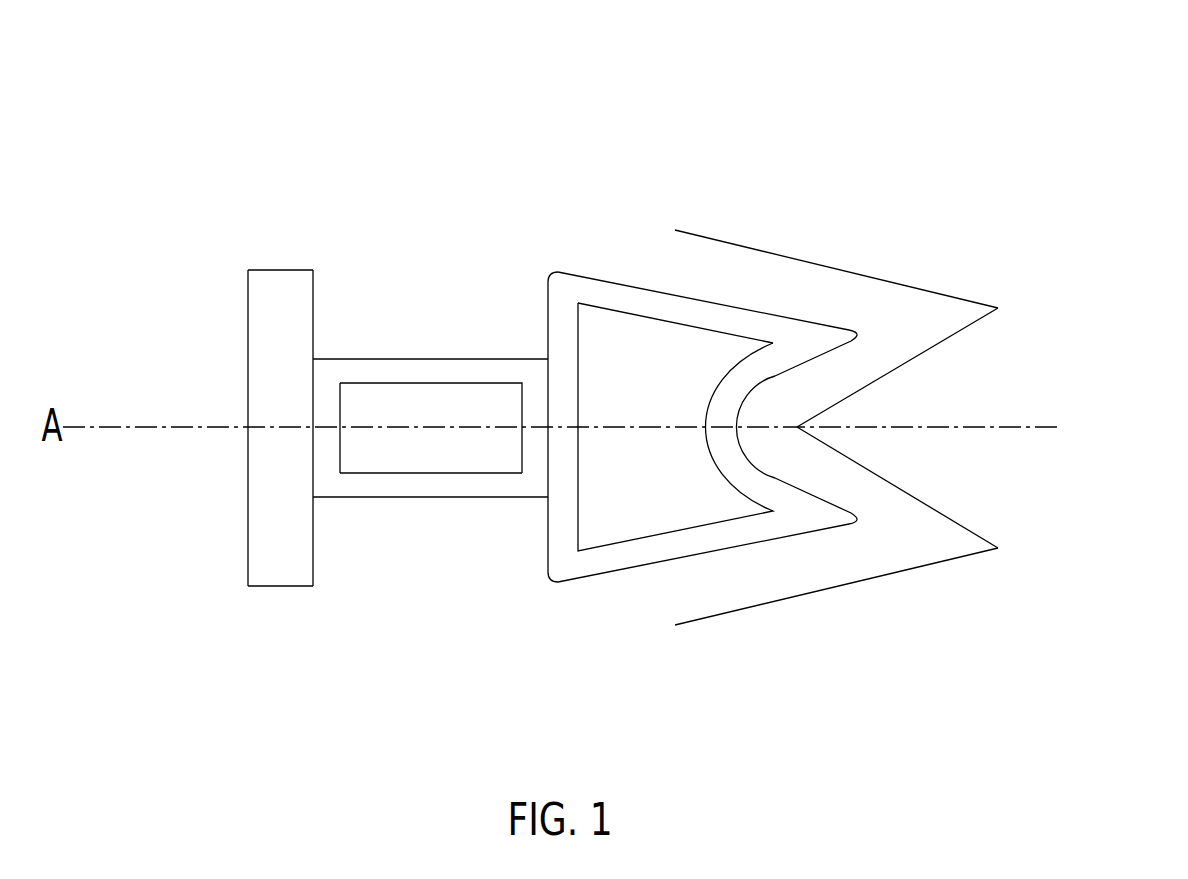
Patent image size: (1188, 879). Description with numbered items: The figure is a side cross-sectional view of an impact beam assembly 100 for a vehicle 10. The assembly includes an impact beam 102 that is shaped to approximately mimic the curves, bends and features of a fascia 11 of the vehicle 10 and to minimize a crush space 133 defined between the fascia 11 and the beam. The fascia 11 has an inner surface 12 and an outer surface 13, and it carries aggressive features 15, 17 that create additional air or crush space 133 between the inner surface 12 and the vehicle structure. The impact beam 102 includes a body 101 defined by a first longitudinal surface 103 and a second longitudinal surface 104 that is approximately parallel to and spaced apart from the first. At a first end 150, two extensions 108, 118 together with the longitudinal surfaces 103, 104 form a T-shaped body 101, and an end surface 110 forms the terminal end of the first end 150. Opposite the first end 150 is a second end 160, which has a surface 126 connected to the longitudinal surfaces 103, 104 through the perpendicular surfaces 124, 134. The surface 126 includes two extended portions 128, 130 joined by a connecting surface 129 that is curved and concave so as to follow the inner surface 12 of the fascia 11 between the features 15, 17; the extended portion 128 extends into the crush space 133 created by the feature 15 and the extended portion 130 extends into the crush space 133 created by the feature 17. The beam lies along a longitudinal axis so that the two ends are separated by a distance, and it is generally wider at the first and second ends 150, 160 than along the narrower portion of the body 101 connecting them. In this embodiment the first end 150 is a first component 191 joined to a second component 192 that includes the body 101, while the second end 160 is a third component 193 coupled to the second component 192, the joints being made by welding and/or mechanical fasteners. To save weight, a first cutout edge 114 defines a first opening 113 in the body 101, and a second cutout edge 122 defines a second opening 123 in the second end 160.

The impact beam assembly 100 is at (168, 166).
The first end 150 is at (242, 316).
The body 101 is at (268, 388).
The extension 108 is at (278, 270).
The end surface 110 is at (247, 360).
The extension 118 is at (277, 586).
The impact beam 102 is at (356, 296).
The first longitudinal surface 103 is at (378, 358).
The second longitudinal surface 104 is at (415, 497).
The first opening 113 is at (364, 447).
The first cutout edge 114 is at (372, 475).
The perpendicular surface 124 is at (548, 300).
The surface 126 is at (607, 277).
The perpendicular surface 134 is at (547, 545).
The extended portion 128 is at (832, 322).
The extended portion 130 is at (852, 502).
The connecting surface 129 is at (740, 440).
The second cutout edge 122 is at (648, 312).
The second opening 123 is at (636, 509).
The second end 160 is at (719, 285).
The crush space 133 is at (892, 319).
The vehicle 10 is at (1090, 324).
The fascia 11 is at (1002, 308).
The inner surface 12 is at (932, 502).
The outer surface 13 is at (910, 368).
The feature 15 is at (965, 332).
The feature 17 is at (987, 550).
The first component 191 is at (314, 136).
The second component 192 is at (463, 178).
The third component 193 is at (776, 95).